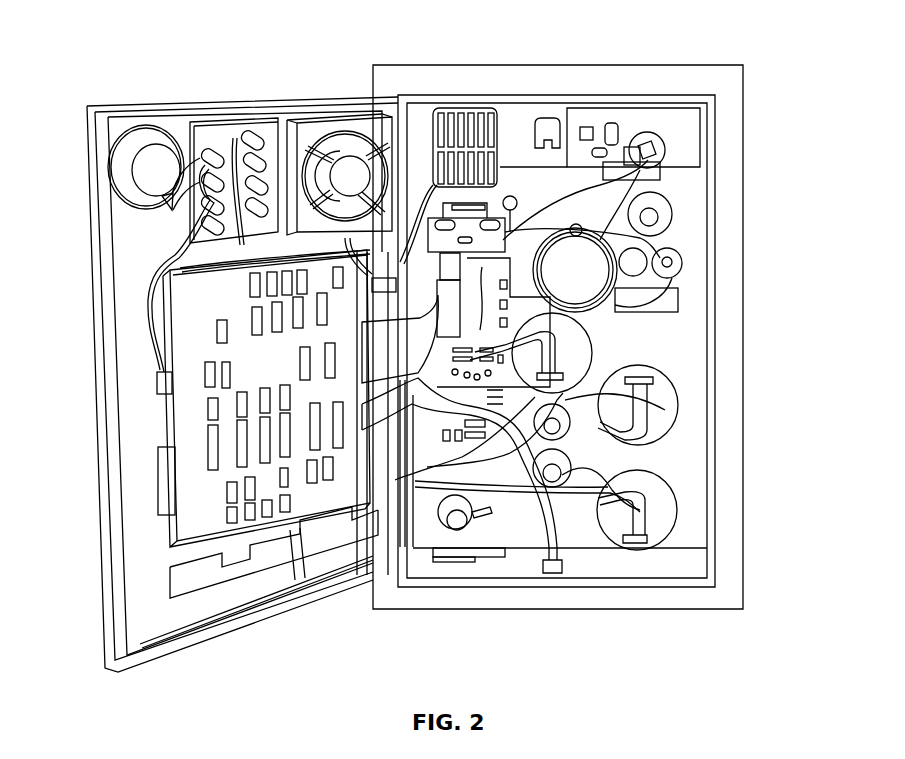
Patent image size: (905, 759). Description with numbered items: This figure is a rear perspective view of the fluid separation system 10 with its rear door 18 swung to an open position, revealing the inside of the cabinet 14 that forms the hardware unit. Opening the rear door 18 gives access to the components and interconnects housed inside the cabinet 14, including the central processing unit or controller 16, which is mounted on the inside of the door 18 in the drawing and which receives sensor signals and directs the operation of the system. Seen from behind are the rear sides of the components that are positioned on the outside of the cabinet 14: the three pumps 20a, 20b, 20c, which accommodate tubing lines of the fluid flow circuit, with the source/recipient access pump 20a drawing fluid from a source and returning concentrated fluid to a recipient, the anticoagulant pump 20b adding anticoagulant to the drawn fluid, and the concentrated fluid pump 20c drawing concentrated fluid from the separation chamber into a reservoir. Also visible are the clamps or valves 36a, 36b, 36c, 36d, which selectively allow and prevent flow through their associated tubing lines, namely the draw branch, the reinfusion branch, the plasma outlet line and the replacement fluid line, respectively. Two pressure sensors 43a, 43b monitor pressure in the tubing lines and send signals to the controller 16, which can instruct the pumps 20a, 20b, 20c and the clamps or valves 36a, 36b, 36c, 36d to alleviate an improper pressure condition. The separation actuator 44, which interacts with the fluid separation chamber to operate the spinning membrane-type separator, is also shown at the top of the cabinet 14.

The fluid separation system 10 is at (68, 587).
The cabinet 14 is at (723, 600).
The central processing unit or controller 16 is at (190, 387).
The rear door 18 is at (175, 648).
The source/recipient access pump 20a is at (660, 513).
The anticoagulant pump 20b is at (667, 410).
The concentrated fluid pump 20c is at (563, 363).
The fluid source/recipient clamp or valve 36a is at (562, 430).
The reinfusion clamp or valve 36b is at (565, 470).
The plasma clamp or valve 36c is at (457, 527).
The replacement fluid clamp or valve 36d is at (653, 206).
The pressure sensor 43a is at (675, 257).
The pressure sensor 43b is at (632, 263).
The separation actuator 44 is at (466, 110).